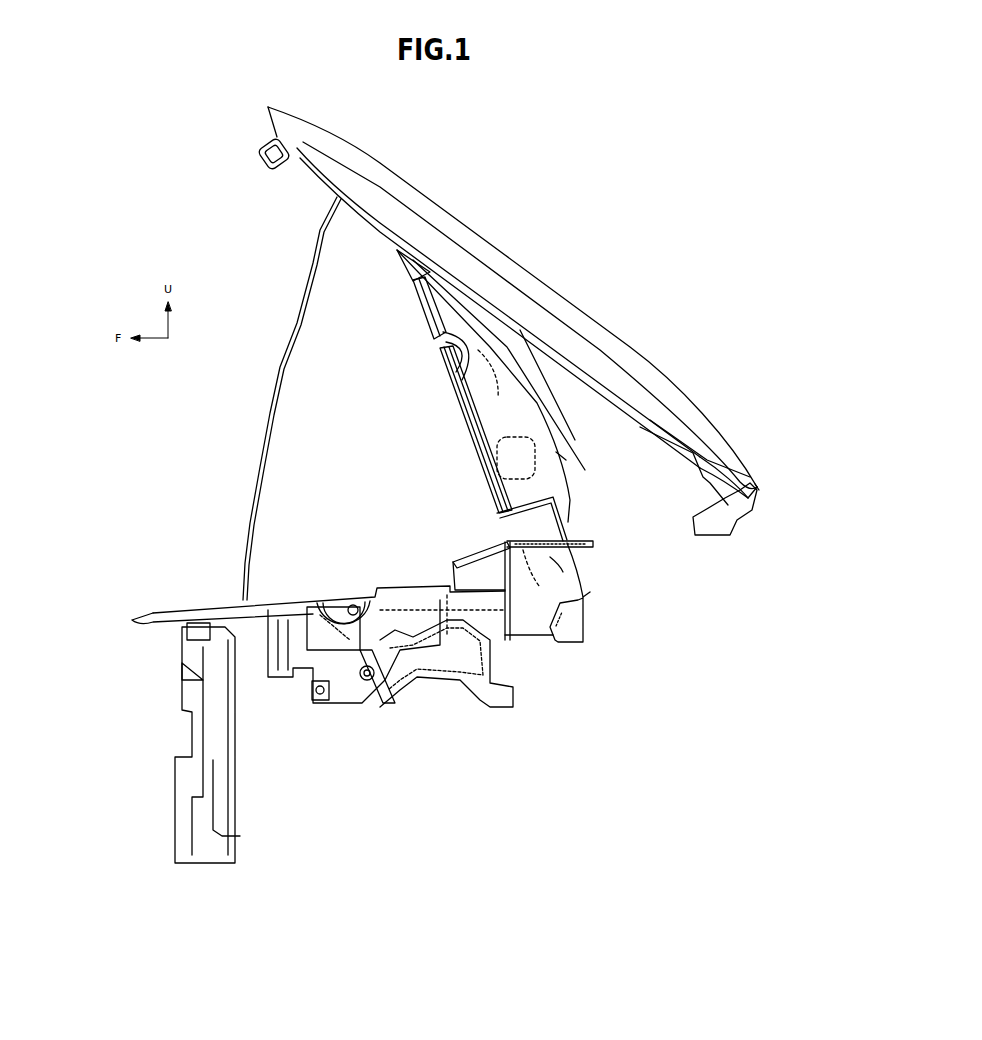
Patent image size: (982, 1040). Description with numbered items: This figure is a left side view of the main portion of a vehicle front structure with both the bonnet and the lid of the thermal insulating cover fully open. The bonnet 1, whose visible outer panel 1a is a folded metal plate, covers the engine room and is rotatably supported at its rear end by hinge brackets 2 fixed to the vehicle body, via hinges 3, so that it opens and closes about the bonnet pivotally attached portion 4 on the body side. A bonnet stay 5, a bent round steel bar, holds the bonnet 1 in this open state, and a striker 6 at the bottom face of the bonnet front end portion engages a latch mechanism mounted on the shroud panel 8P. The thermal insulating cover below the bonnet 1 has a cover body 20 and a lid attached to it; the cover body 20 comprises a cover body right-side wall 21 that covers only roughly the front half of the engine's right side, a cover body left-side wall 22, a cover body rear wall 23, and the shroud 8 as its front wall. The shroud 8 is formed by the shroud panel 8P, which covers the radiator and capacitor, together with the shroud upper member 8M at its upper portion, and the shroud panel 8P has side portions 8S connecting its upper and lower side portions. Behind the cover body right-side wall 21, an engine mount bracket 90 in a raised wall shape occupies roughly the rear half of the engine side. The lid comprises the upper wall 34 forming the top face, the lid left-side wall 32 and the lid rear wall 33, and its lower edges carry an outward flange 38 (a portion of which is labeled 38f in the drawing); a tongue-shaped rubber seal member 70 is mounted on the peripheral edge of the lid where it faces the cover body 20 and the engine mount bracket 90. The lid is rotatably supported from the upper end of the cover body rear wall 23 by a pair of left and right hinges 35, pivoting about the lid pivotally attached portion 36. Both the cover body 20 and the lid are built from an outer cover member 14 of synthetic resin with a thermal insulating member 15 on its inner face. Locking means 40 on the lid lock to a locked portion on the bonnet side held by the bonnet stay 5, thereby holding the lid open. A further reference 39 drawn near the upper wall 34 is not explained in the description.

The bonnet 1 is at (430, 170).
The outer panel 1a is at (588, 310).
The hinge brackets 2 is at (735, 538).
The hinges 3 is at (700, 488).
The support portions 4 is at (760, 485).
The bonnet stay 5 is at (278, 370).
The striker 6 is at (262, 162).
The shroud 8 is at (206, 720).
The shroud upper member 8M is at (180, 610).
The shroud panel 8P is at (170, 715).
The side portions 8S is at (238, 805).
The outer cover member 14 is at (543, 443).
The thermal insulating member 15 is at (605, 633).
The cover body 20 is at (592, 617).
The cover body right-side wall 21 is at (325, 712).
The cover body left-side wall 22 is at (392, 590).
The cover body rear wall 23 is at (590, 593).
The lid left-side wall 32 is at (470, 400).
The lid rear wall 33 is at (577, 498).
The upper wall 34 is at (537, 403).
The hinges 35 is at (563, 540).
The support portions 36 is at (574, 554).
The flange 38 is at (419, 323).
The garnish front portion 38f is at (410, 270).
The joint portion 39 is at (562, 457).
The locking means 40 is at (394, 258).
The seal member 70 is at (500, 488).
The engine mount bracket 90 is at (497, 662).